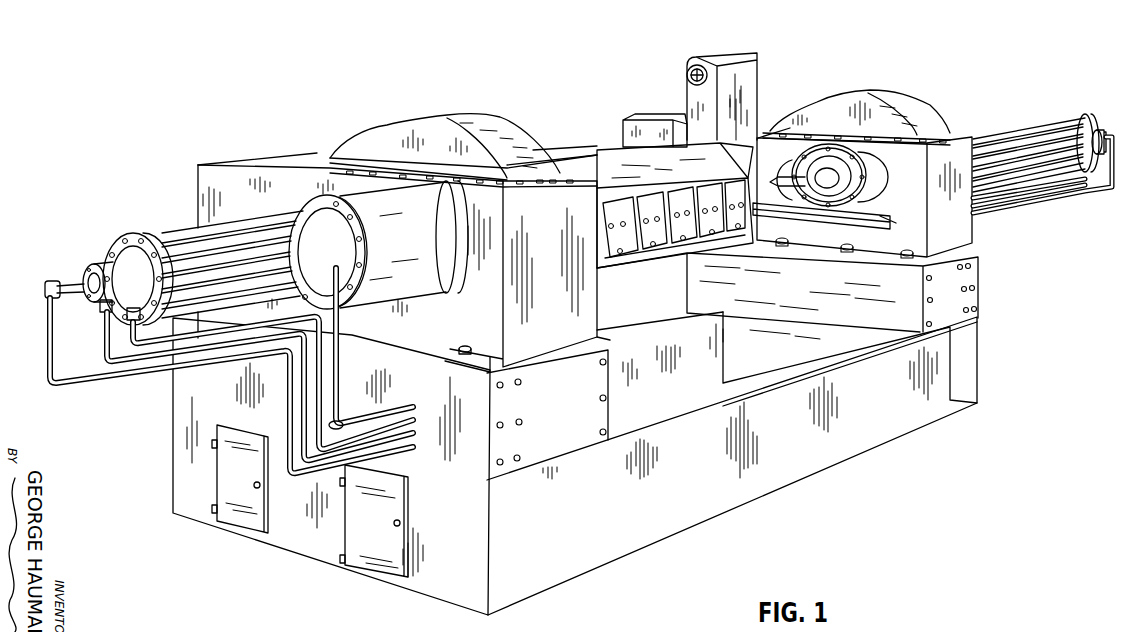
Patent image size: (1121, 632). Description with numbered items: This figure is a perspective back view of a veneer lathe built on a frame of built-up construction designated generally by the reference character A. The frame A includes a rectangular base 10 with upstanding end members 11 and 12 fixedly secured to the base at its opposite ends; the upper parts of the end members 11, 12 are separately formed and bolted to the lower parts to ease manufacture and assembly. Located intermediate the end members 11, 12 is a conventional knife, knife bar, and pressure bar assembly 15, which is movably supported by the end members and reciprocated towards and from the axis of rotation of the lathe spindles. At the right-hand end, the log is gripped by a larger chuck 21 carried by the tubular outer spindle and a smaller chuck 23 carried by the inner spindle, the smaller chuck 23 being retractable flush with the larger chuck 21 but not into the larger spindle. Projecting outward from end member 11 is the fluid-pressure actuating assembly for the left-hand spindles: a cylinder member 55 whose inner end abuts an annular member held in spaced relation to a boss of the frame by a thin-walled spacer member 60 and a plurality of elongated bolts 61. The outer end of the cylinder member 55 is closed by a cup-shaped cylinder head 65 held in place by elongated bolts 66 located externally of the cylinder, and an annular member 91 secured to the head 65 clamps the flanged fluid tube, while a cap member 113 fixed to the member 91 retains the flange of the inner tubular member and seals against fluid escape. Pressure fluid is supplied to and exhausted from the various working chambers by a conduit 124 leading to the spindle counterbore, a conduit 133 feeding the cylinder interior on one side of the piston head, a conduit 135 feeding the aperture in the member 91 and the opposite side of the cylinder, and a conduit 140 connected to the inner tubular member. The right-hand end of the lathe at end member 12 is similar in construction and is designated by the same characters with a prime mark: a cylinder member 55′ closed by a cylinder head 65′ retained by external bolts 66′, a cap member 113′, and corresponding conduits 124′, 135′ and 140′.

The rectangular base 10 is at (655, 515).
The upstanding end member 11 is at (587, 313).
The upstanding end member 12 is at (940, 230).
The knife, knife bar, and pressure bar assembly 15 is at (667, 250).
The chuck 21 is at (831, 134).
The chuck 23 is at (826, 215).
The cylinder member 55 is at (252, 248).
The spacer member 60 is at (417, 288).
The elongated bolts 61 is at (305, 203).
The cylinder head 65 is at (143, 238).
The elongated bolts 66 is at (181, 247).
The annular member 91 is at (105, 260).
The cap member 113 is at (83, 277).
The conduit 124 is at (163, 343).
The conduit 133 is at (341, 313).
The conduit 135 is at (102, 352).
The conduit 140 is at (47, 352).
The frame A is at (165, 421).
The cylinder member 55′ is at (1017, 157).
The cylinder head 65′ is at (1075, 115).
The elongated bolts 66′ is at (980, 138).
The cap member 113′ is at (1097, 128).
The conduit 124′ is at (996, 201).
The conduit 135′ is at (1040, 203).
The conduit 140′ is at (1073, 197).